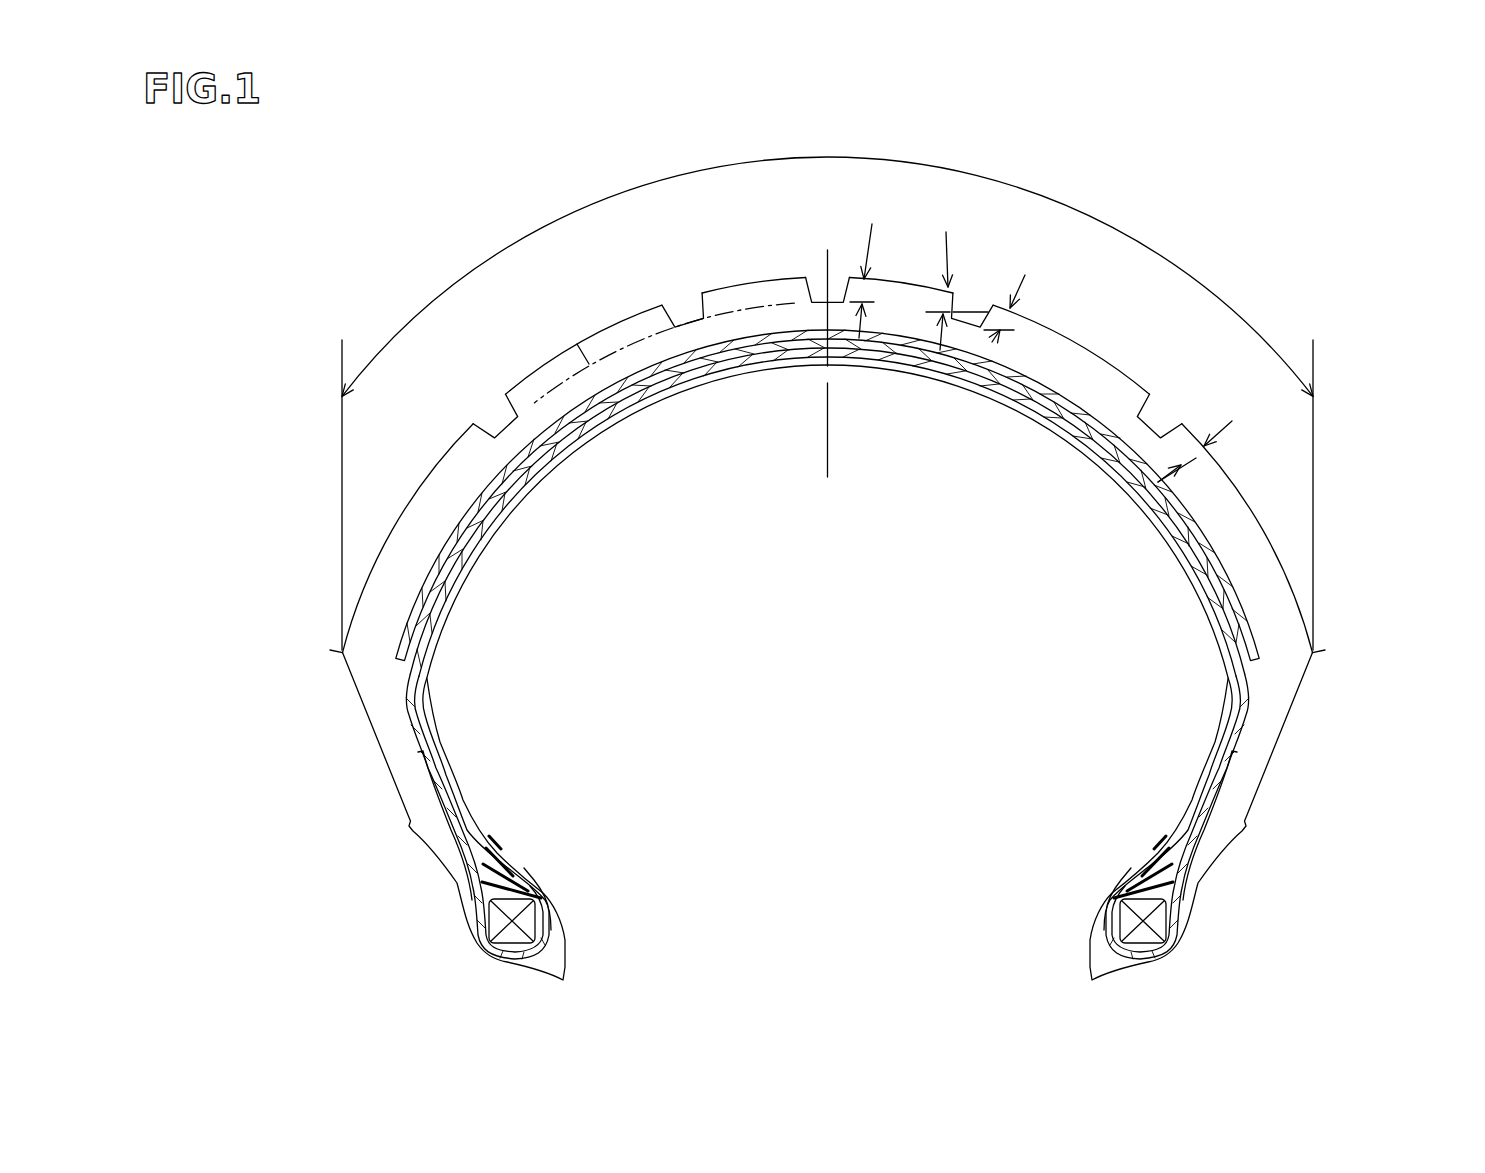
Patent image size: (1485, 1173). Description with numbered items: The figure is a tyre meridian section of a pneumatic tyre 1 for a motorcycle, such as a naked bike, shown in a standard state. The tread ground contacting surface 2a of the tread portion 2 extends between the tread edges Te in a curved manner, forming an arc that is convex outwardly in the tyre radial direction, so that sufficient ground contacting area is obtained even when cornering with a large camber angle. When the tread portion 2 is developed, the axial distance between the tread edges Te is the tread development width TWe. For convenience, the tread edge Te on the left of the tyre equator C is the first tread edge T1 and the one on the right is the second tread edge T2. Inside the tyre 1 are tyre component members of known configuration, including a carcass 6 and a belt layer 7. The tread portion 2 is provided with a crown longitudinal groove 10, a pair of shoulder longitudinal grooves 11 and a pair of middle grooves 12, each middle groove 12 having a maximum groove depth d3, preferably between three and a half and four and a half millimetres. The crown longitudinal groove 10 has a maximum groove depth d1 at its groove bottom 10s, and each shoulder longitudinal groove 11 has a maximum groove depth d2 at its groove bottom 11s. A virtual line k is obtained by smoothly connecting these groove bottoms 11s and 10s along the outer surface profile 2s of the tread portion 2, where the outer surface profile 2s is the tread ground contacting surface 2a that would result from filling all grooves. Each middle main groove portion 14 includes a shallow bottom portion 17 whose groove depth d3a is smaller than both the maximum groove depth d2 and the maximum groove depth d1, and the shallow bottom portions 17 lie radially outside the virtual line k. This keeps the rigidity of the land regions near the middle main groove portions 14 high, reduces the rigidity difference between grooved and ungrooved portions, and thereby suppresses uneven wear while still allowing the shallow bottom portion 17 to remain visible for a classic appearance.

The tyre 1 is at (1228, 229).
The tread portion 2 is at (758, 276).
The tread ground contacting surface 2a is at (1196, 480).
The outer surface profile 2s is at (1080, 346).
The carcass 6 is at (1070, 435).
The belt layer 7 is at (744, 343).
The crown longitudinal groove 10 is at (818, 274).
The groove bottom 10s is at (818, 298).
The shoulder longitudinal groove 11 is at (1155, 415).
The groove bottom 11s is at (482, 423).
The middle groove 12 is at (686, 288).
The middle main groove portion 14 is at (678, 305).
The shallow bottom portion 17 is at (975, 310).
The virtual line k is at (574, 338).
The tyre equator C is at (826, 350).
The maximum groove depth of the crown longitudinal groove d1 is at (873, 263).
The maximum groove depth of the shoulder longitudinal grooves d2 is at (1221, 447).
The maximum groove depth of the middle grooves d3 is at (946, 276).
The groove depth of the shallow bottom portion d3a is at (1012, 306).
The tread development width TWe is at (827, 388).
The tread edge Te is at (832, 603).
The first tread edge T1 is at (340, 650).
The second tread edge T2 is at (1315, 650).